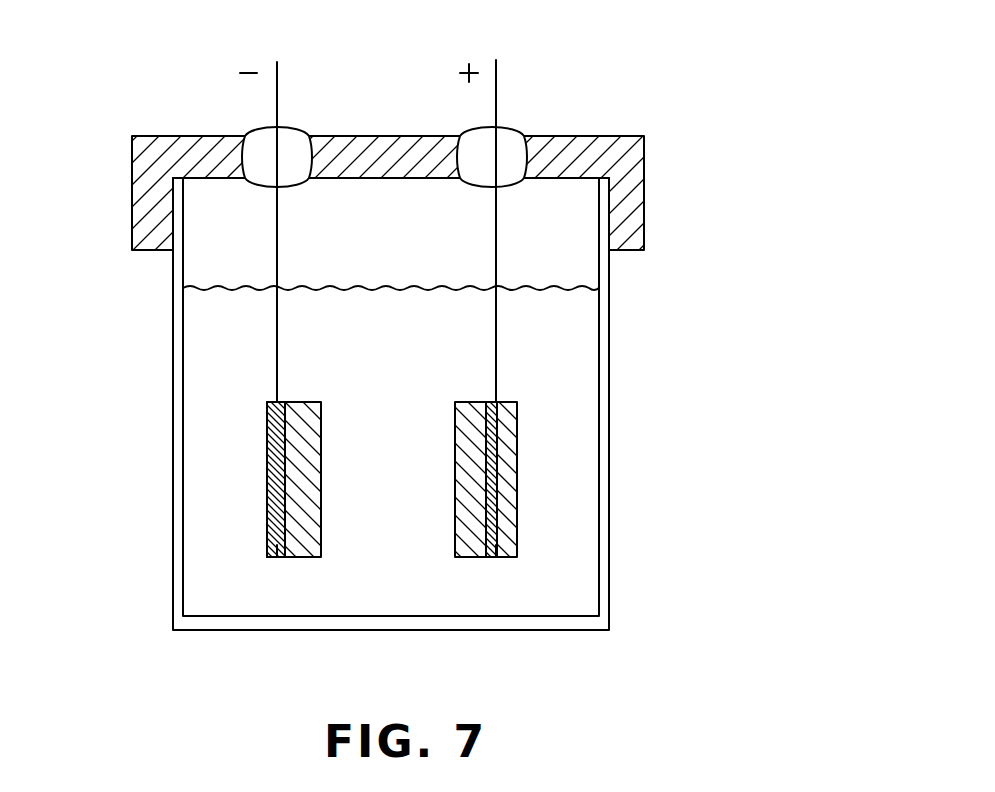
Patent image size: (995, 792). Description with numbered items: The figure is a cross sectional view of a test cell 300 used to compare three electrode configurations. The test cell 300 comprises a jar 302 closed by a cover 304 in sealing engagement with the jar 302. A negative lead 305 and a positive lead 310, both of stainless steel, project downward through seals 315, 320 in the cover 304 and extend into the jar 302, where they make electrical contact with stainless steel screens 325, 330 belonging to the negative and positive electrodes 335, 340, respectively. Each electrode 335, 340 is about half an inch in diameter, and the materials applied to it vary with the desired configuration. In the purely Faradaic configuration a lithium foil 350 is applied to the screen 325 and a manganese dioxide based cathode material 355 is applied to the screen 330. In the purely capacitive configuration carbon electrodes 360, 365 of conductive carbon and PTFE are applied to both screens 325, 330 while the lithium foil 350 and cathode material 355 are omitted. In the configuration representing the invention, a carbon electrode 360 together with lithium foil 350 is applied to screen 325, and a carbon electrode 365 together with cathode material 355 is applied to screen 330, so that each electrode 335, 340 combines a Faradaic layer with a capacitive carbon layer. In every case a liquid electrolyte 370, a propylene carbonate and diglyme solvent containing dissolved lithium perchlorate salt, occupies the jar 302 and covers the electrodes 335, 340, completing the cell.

The test cell 300 is at (690, 116).
The jar 302 is at (610, 445).
The cover 304 is at (645, 207).
The negative lead 305 is at (278, 90).
The positive lead 310 is at (497, 90).
The seal 315 is at (302, 127).
The seal 320 is at (518, 127).
The screen 325 is at (278, 558).
The screen 330 is at (490, 558).
The electrode 335 is at (244, 566).
The electrode 340 is at (516, 573).
The lithium foil 350 is at (213, 458).
The cathode material 355 is at (562, 458).
The carbon electrode 360 is at (308, 402).
The carbon electrode 365 is at (477, 402).
The liquid electrolyte 370 is at (418, 356).